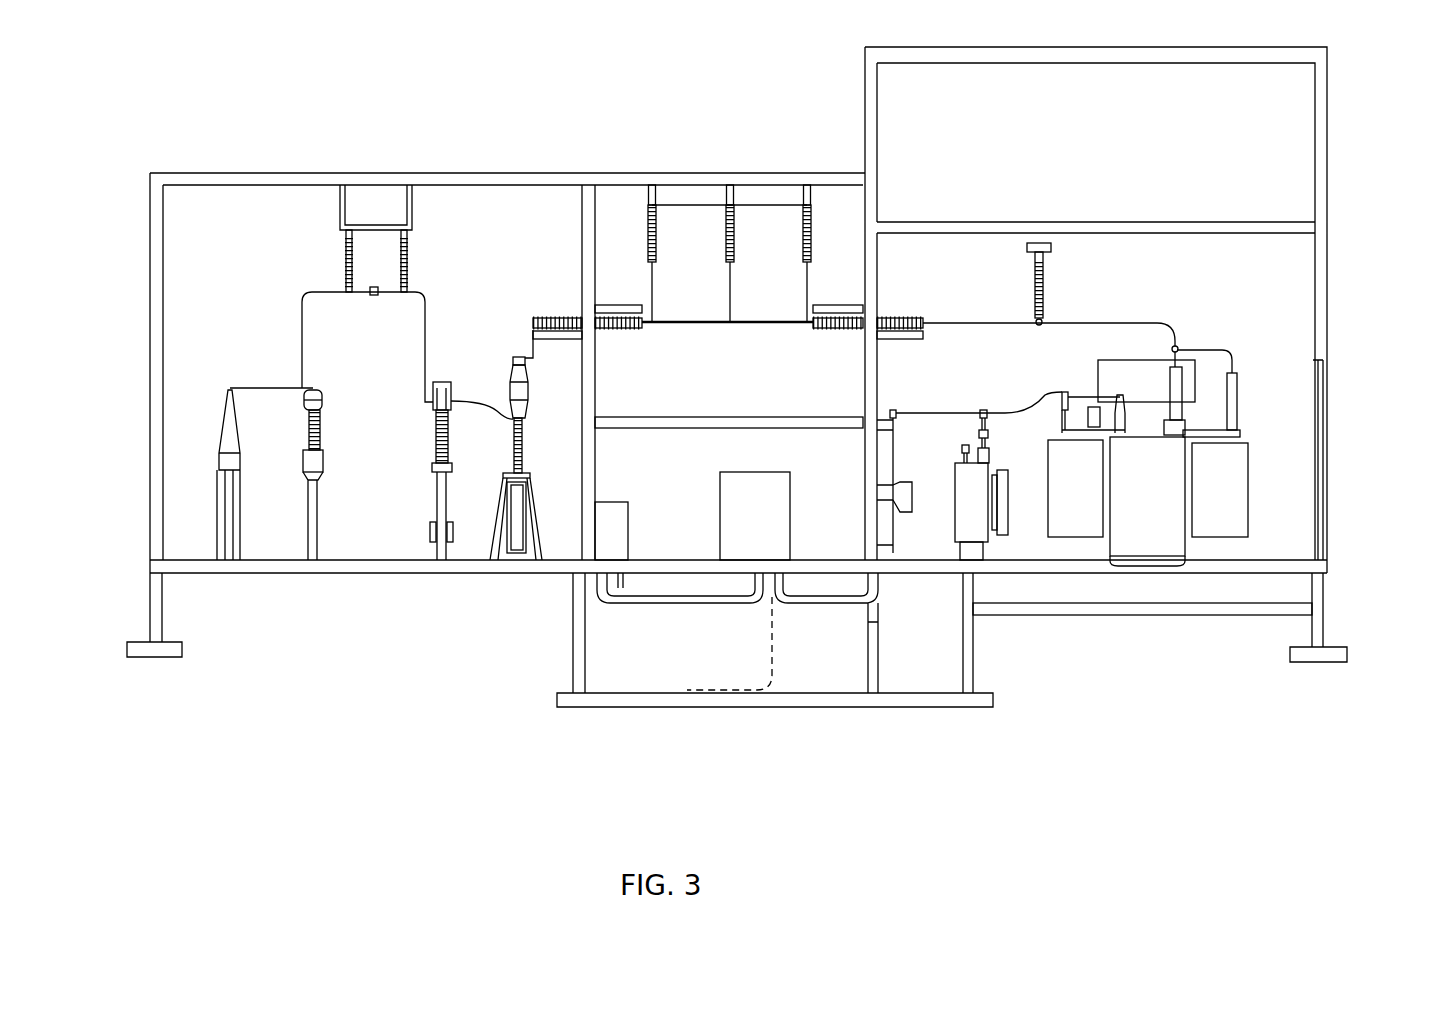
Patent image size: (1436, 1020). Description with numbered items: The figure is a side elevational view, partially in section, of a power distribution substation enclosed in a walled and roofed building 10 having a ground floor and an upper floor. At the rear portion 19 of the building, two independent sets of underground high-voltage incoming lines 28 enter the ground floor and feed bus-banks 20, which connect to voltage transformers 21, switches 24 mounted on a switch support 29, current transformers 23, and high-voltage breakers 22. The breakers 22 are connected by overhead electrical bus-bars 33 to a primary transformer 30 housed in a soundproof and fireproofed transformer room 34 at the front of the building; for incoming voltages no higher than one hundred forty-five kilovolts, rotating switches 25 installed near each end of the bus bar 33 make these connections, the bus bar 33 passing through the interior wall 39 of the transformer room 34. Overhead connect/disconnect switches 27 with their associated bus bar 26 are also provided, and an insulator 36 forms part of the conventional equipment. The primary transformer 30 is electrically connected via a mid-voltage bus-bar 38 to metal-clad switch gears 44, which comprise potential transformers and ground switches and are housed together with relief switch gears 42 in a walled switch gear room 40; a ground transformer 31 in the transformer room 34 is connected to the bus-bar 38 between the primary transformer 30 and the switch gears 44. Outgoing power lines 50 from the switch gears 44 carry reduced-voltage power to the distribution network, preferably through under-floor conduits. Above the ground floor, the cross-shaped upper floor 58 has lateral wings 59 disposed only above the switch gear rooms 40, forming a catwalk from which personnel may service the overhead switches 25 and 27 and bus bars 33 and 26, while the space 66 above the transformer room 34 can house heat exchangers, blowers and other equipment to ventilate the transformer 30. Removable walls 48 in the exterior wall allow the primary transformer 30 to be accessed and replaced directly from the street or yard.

The building 10 is at (210, 170).
The rear portion 19 is at (182, 249).
The bus-banks 20 is at (300, 318).
The voltage transformers 21 is at (324, 422).
The breakers 22 is at (529, 390).
The current transformers 23 is at (450, 386).
The switches 24 is at (409, 245).
The rotating switches 25 is at (575, 317).
The bus bar 26 is at (667, 326).
The connect/disconnect switches 27 is at (736, 211).
The incoming lines 28 is at (216, 430).
The switch support 29 is at (339, 200).
The primary transformer 30 is at (1144, 504).
The ground transformer 31 is at (956, 496).
The bus-bar 33 is at (1121, 323).
The transformer room 34 is at (1257, 269).
The insulator 36 is at (1047, 270).
The mid-voltage bus-bar 38 is at (951, 410).
The interior wall 39 is at (879, 255).
The switch gear room 40 is at (692, 459).
The relief switch gears 42 is at (608, 522).
The metal-clad switch gears 44 is at (768, 494).
The removable walls 48 is at (1331, 521).
The outgoing power lines 50 is at (767, 626).
The upper floor 58 is at (769, 415).
The lateral wings 59 is at (979, 633).
The space 66 is at (1227, 140).